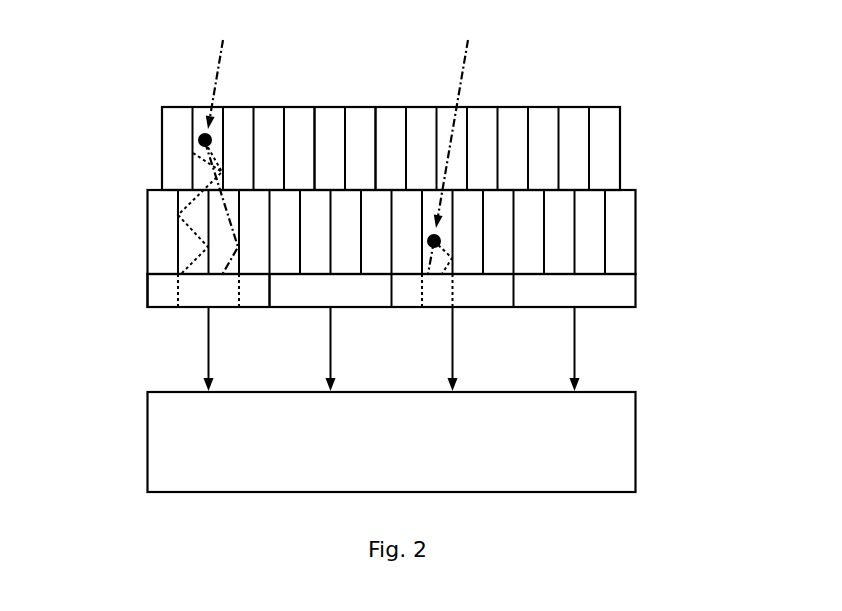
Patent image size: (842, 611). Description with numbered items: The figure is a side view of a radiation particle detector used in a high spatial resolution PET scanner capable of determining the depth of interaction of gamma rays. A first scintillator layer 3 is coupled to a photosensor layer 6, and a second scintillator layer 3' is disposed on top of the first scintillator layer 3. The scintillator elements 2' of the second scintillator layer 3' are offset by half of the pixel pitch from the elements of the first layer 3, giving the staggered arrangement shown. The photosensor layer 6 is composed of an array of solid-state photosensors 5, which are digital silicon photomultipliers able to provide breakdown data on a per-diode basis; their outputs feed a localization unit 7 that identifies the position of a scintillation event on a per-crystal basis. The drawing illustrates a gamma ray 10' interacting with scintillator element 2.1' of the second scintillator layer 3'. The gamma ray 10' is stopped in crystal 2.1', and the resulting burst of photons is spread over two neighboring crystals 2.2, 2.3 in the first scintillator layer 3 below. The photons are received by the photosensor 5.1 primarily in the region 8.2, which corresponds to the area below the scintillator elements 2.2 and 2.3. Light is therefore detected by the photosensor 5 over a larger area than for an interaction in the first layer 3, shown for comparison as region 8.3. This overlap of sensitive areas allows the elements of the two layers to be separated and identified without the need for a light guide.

The gamma ray 10' is at (194, 70).
The scintillator element 2.1' is at (162, 97).
The scintillator element 2.2 is at (183, 197).
The scintillator element 2.3 is at (230, 197).
The scintillator elements 2' is at (361, 117).
The second scintillator layer 3' is at (437, 148).
The first scintillator layer 3 is at (428, 232).
The photosensor layer 6 is at (660, 292).
The photosensor 5.1 is at (155, 288).
The region 8.2 is at (197, 301).
The region 8.3 is at (430, 297).
The photosensors 5 is at (612, 298).
The localization unit 7 is at (622, 443).